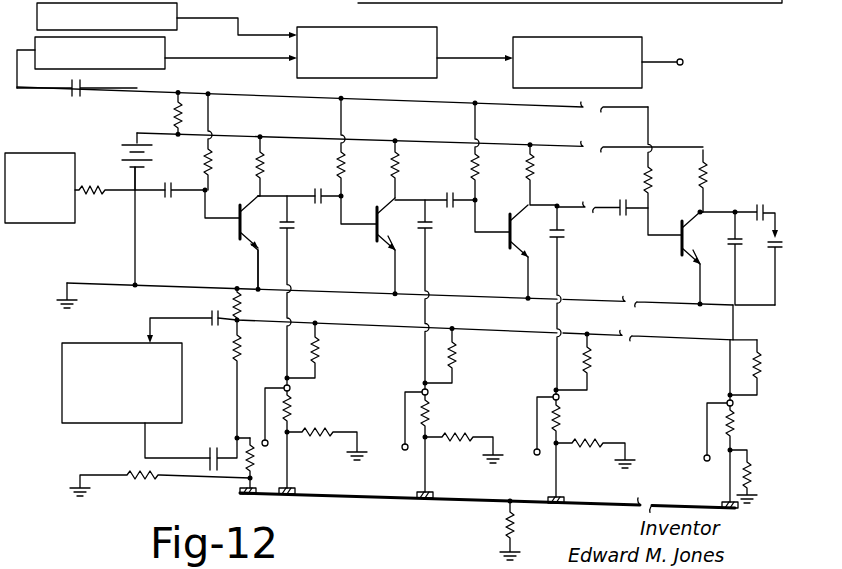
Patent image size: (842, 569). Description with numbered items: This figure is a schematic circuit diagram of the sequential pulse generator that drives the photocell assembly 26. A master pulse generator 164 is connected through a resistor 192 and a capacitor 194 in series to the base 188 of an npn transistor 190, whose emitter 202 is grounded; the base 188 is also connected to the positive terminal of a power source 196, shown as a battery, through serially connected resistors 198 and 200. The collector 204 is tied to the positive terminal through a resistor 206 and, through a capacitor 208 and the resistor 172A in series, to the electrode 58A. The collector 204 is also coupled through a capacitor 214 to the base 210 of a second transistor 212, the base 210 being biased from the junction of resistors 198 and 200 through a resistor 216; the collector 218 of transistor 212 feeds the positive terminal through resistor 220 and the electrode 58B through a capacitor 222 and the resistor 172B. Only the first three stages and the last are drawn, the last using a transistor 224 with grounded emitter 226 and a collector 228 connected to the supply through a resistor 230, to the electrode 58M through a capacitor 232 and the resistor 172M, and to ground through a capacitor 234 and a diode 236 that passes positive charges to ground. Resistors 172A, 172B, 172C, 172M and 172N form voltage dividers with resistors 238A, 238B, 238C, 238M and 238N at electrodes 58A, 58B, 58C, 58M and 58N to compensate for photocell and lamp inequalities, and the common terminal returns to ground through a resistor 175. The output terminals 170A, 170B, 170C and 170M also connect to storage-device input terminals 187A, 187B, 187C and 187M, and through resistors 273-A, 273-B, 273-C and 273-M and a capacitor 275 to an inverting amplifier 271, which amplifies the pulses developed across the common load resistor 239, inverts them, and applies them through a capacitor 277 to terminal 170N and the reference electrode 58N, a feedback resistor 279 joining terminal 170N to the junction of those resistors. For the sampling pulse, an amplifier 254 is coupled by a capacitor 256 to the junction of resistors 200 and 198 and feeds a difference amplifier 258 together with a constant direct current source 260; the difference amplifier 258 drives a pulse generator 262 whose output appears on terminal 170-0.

The constant direct current source 260 is at (178, 14).
The amplifier 254 is at (167, 50).
The difference amplifier 258 is at (390, 28).
The pulse generator 262 is at (624, 37).
The terminal 170-0 is at (683, 65).
The master pulse generator 164 is at (22, 226).
The inverting amplifier 271 is at (108, 424).
The photocell assembly 26 is at (442, 504).
The capacitor 256 is at (76, 98).
The resistor 200 is at (175, 112).
The power source 196 is at (136, 141).
The resistor 198 is at (204, 160).
The resistor 192 is at (97, 195).
The capacitor 194 is at (170, 200).
The collector 204 is at (258, 176).
The resistor 206 is at (278, 178).
The transistor 190 is at (215, 242).
The base 188 is at (210, 229).
The emitter 202 is at (248, 246).
The capacitor 214 is at (316, 190).
The capacitor 208 is at (294, 227).
The resistor 216 is at (344, 165).
The collector 218 is at (392, 194).
The transistor 212 is at (368, 237).
The base 210 is at (380, 248).
The resistor 220 is at (402, 167).
The capacitor 222 is at (436, 232).
The collector 228 is at (694, 212).
The resistor 230 is at (706, 174).
The transistor 224 is at (666, 246).
The emitter 226 is at (690, 262).
The capacitor 234 is at (760, 203).
The capacitor 232 is at (736, 247).
The diode 236 is at (772, 250).
The capacitor 275 is at (212, 312).
The common load resistor 239 is at (242, 300).
The feedback resistor 279 is at (234, 345).
The capacitor 277 is at (215, 440).
The output terminal 170N is at (236, 436).
The resistor 172N is at (258, 459).
The resistor 238N is at (128, 478).
The electrode 58N is at (242, 495).
The resistor 273-A is at (320, 356).
The output terminal 170A is at (292, 388).
The input terminal 187A is at (261, 438).
The resistor 172A is at (292, 416).
The resistor 238A is at (334, 431).
The electrode 58A is at (290, 498).
The resistor 273-B is at (458, 361).
The output terminal 170B is at (430, 392).
The input terminal 187B is at (408, 452).
The resistor 172B is at (430, 416).
The resistor 238B is at (462, 436).
The electrode 58B is at (428, 493).
The resistor 273-C is at (590, 362).
The output terminal 170C is at (562, 397).
The input terminal 187C is at (536, 456).
The resistor 172C is at (562, 421).
The resistor 238C is at (585, 441).
The electrode 58C is at (560, 497).
The resistor 175 is at (505, 525).
The resistor 273-M is at (754, 369).
The output terminal 170M is at (733, 405).
The input terminal 187M is at (706, 460).
The resistor 172M is at (749, 429).
The resistor 238M is at (770, 450).
The electrode 58M is at (720, 503).